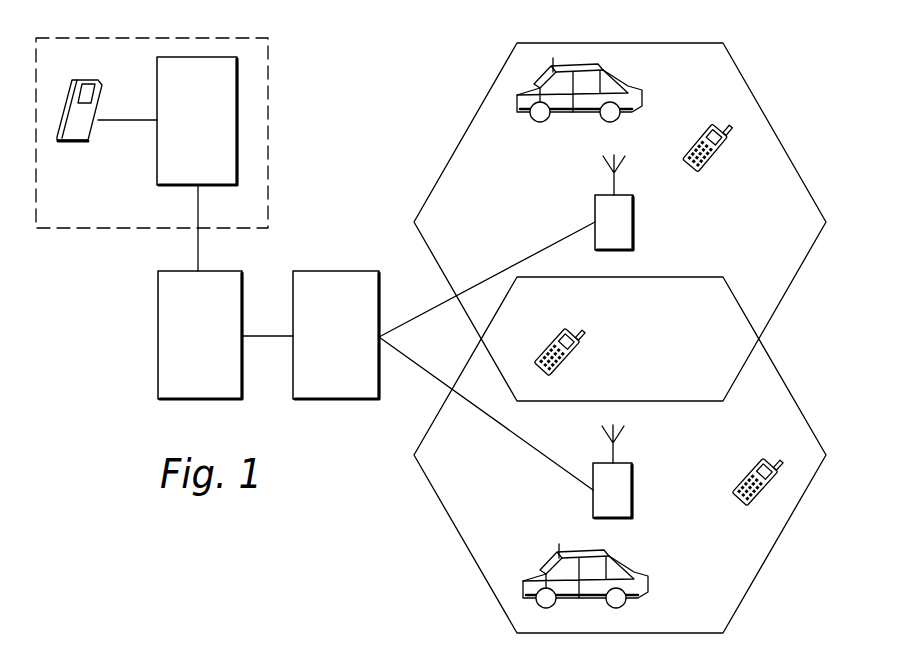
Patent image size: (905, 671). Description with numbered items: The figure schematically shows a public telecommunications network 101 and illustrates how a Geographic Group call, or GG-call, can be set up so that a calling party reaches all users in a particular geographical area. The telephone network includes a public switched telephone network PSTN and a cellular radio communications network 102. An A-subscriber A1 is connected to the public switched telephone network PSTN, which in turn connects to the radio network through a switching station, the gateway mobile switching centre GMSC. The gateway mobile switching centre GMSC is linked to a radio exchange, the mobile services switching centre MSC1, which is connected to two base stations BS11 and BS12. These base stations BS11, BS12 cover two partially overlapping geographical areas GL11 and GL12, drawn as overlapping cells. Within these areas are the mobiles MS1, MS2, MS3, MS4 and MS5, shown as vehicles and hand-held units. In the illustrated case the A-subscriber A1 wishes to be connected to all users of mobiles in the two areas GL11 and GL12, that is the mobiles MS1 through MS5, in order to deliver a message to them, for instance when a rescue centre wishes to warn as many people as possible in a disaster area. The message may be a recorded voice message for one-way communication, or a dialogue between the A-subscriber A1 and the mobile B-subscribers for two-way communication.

The public telecommunications network 101 is at (308, 24).
The cellular radio communications network 102 is at (404, 92).
The A-subscriber A1 is at (70, 144).
The public switched telephone network PSTN is at (197, 164).
The gateway mobile switching centre GMSC is at (225, 335).
The mobile services switching centre MSC1 is at (444, 356).
The geographical area GL11 is at (770, 121).
The geographical area GL12 is at (782, 385).
The base station BS11 is at (633, 222).
The base station BS12 is at (632, 490).
The mobile MS1 is at (570, 122).
The mobile MS2 is at (712, 170).
The mobile MS3 is at (570, 354).
The mobile MS4 is at (749, 464).
The mobile MS5 is at (648, 586).